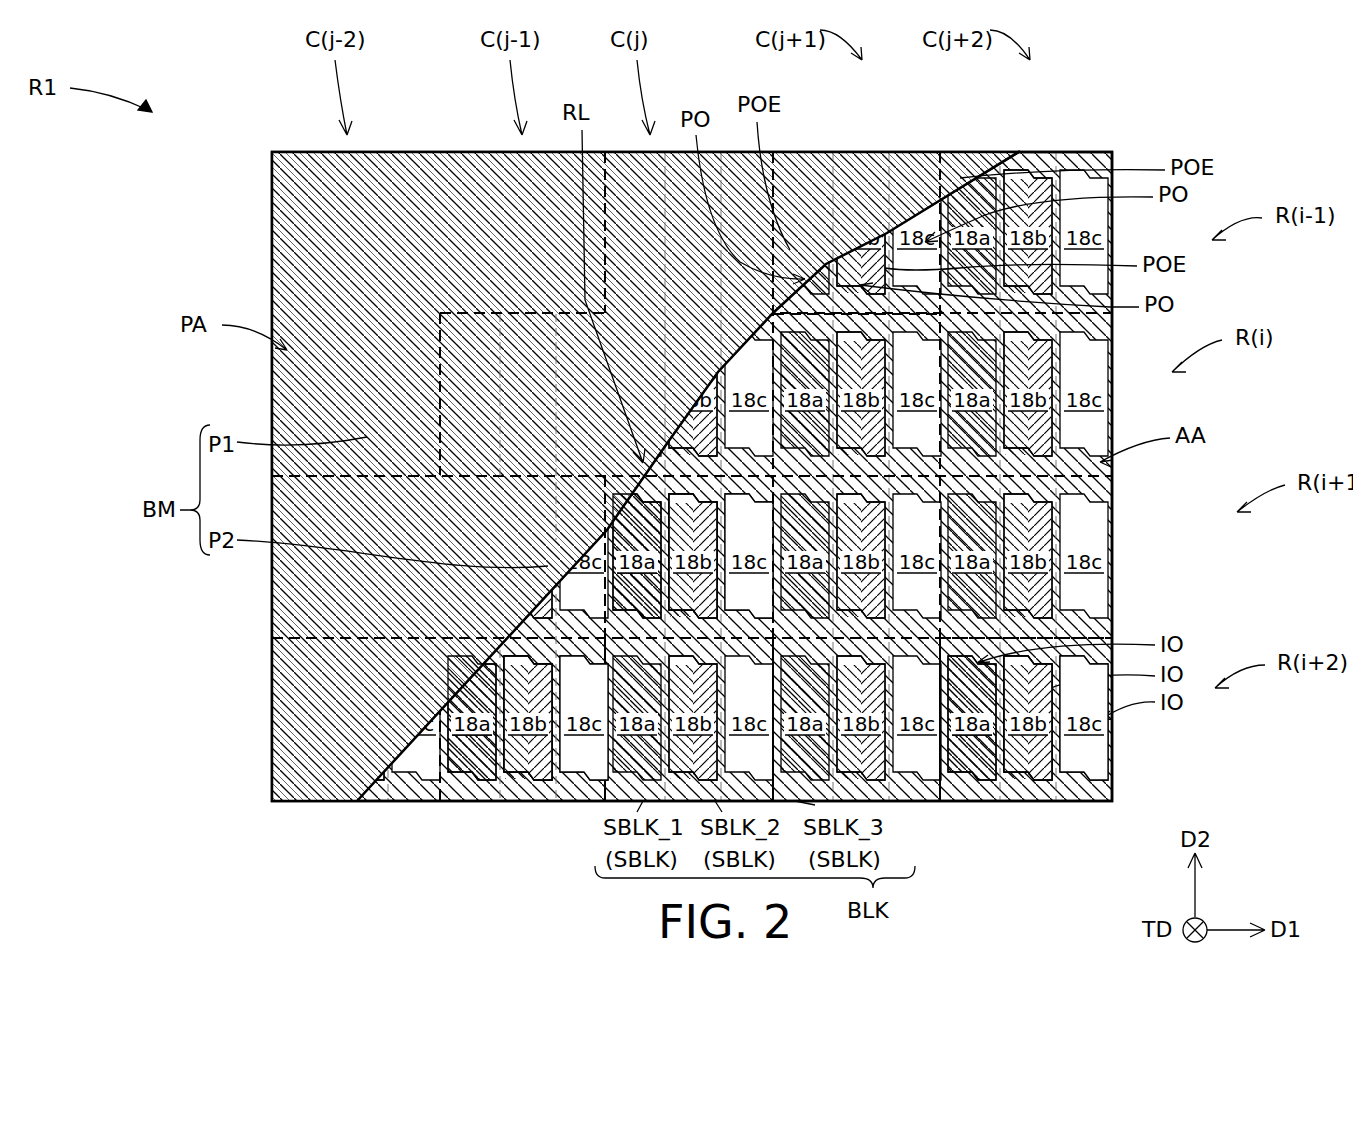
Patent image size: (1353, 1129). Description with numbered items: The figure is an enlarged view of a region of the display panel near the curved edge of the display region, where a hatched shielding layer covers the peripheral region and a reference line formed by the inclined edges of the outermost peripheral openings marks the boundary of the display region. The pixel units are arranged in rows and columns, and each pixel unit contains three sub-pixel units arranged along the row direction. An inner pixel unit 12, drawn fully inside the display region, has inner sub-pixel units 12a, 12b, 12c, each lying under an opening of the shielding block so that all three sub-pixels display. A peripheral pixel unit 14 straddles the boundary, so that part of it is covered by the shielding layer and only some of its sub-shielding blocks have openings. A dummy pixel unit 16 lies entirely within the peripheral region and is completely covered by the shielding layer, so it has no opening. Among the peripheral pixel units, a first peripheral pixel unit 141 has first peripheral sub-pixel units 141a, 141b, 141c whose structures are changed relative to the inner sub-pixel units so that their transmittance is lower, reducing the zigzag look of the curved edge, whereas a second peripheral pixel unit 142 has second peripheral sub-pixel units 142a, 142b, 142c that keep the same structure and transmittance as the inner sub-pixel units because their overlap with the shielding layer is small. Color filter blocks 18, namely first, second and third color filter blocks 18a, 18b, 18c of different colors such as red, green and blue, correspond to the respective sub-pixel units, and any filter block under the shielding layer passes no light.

The inner pixel unit 12 is at (1240, 722).
The inner sub-pixel unit 12a is at (975, 800).
The inner sub-pixel unit 12b is at (1040, 800).
The inner sub-pixel unit 12c is at (1098, 800).
The peripheral pixel unit 14 is at (577, 482).
The dummy pixel unit 16 is at (450, 312).
The color filter block 18 is at (689, 719).
The first color filter block 18a is at (638, 475).
The second color filter block 18b is at (694, 475).
The third color filter block 18c is at (750, 475).
The first peripheral pixel unit 141 is at (1188, 62).
The first peripheral sub-pixel unit 141a is at (862, 175).
The first peripheral sub-pixel unit 141b is at (898, 190).
The first peripheral sub-pixel unit 141c is at (938, 200).
The second peripheral pixel unit 142 is at (115, 683).
The second peripheral sub-pixel unit 142a is at (580, 650).
The second peripheral sub-pixel unit 142b is at (700, 665).
The second peripheral sub-pixel unit 142c is at (752, 680).